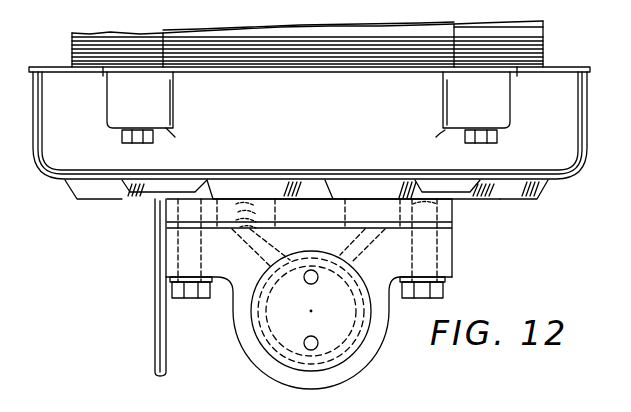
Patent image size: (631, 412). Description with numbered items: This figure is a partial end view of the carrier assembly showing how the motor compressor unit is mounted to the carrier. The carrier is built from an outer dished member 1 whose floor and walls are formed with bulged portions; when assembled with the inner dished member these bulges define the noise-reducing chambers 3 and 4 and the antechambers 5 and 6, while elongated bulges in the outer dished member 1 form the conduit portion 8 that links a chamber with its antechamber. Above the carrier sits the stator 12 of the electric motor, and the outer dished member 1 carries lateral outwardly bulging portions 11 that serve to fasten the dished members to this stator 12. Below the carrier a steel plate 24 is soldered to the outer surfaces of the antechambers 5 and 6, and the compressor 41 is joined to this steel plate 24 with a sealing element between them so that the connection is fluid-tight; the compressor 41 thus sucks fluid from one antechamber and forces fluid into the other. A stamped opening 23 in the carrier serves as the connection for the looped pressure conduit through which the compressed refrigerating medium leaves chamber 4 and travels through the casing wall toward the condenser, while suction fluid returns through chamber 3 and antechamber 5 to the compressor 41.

The outer dished member 1 is at (583, 124).
The noise-reducing chamber 3 is at (508, 197).
The noise-reducing chamber 4 is at (97, 197).
The antechamber 5 is at (368, 188).
The antechamber 6 is at (247, 193).
The conduit portion 8 is at (170, 186).
The lateral outwardly bulging portion 11 is at (122, 106).
The stator 12 is at (325, 18).
The opening 23 is at (156, 206).
The steel plate 24 is at (326, 219).
The compressor 41 is at (378, 346).